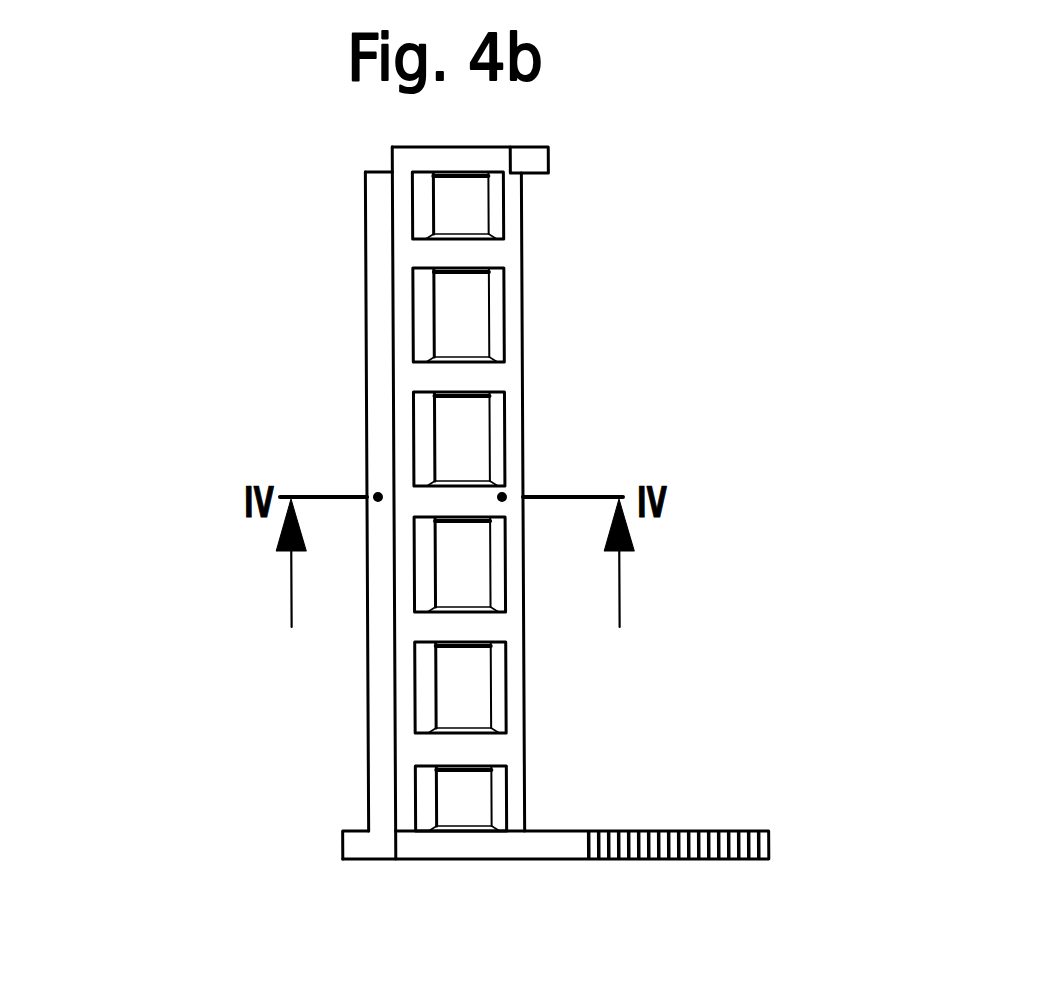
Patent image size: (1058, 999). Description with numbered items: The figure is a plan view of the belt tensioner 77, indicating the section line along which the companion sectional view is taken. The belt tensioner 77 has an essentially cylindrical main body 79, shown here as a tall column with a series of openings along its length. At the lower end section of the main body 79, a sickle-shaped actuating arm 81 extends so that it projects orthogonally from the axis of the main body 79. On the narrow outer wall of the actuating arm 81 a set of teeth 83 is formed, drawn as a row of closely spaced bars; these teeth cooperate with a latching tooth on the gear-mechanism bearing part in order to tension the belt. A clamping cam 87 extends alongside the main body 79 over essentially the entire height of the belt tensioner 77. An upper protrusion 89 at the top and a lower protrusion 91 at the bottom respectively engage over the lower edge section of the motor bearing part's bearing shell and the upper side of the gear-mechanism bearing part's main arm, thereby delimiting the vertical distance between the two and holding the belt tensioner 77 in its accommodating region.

The belt tensioner 77 is at (586, 289).
The main body 79 is at (478, 430).
The actuating arm 81 is at (540, 847).
The set of teeth 83 is at (738, 845).
The clamping cam 87 is at (376, 345).
The upper protrusion 89 is at (540, 160).
The lower protrusion 91 is at (345, 840).